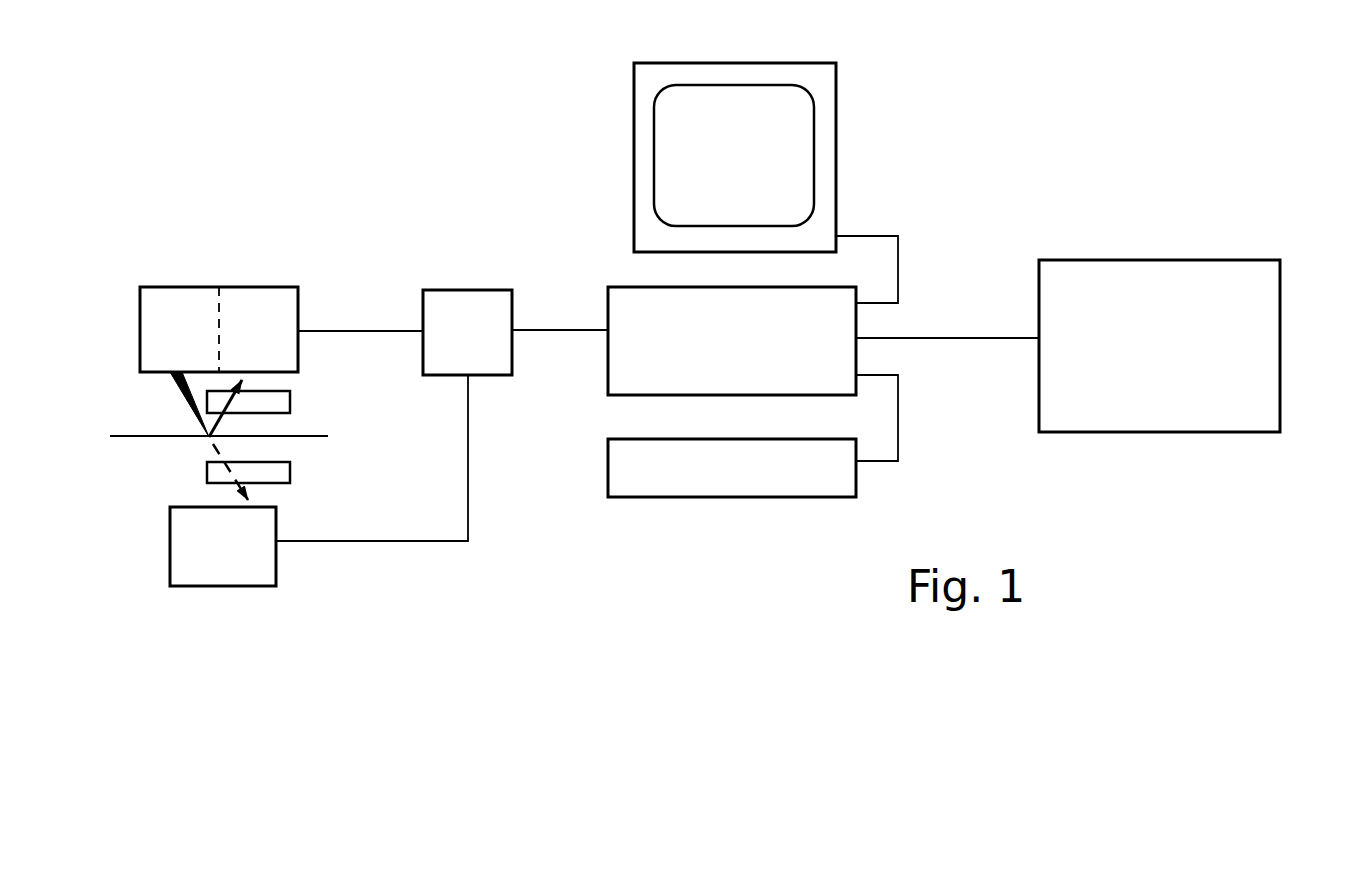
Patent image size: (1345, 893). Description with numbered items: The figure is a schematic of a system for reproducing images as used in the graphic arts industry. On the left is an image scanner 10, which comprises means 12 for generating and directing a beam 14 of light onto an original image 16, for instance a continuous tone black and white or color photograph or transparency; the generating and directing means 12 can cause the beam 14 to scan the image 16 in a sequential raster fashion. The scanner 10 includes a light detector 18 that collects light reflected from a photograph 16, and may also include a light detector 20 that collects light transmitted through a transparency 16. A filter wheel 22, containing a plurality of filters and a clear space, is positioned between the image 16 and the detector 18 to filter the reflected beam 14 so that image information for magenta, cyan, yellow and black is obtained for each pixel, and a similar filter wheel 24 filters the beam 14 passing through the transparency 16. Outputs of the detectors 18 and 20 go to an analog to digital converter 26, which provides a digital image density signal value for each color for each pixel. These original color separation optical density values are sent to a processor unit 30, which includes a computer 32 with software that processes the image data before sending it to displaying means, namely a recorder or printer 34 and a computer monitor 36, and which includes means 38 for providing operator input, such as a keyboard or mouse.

The image scanner 10 is at (357, 236).
The means for generating and directing a beam of light 12 is at (219, 329).
The beam of light 14 is at (173, 389).
The original image 16 is at (138, 435).
The light detector 18 is at (244, 329).
The light detector 20 is at (223, 515).
The filter wheel 22 is at (292, 402).
The filter wheel 24 is at (292, 472).
The analog to digital converter 26 is at (468, 290).
The processor unit 30 is at (978, 134).
The computer 32 is at (732, 341).
The recorder or printer 34 is at (1159, 346).
The computer monitor 36 is at (735, 157).
The means for providing operator input 38 is at (732, 468).